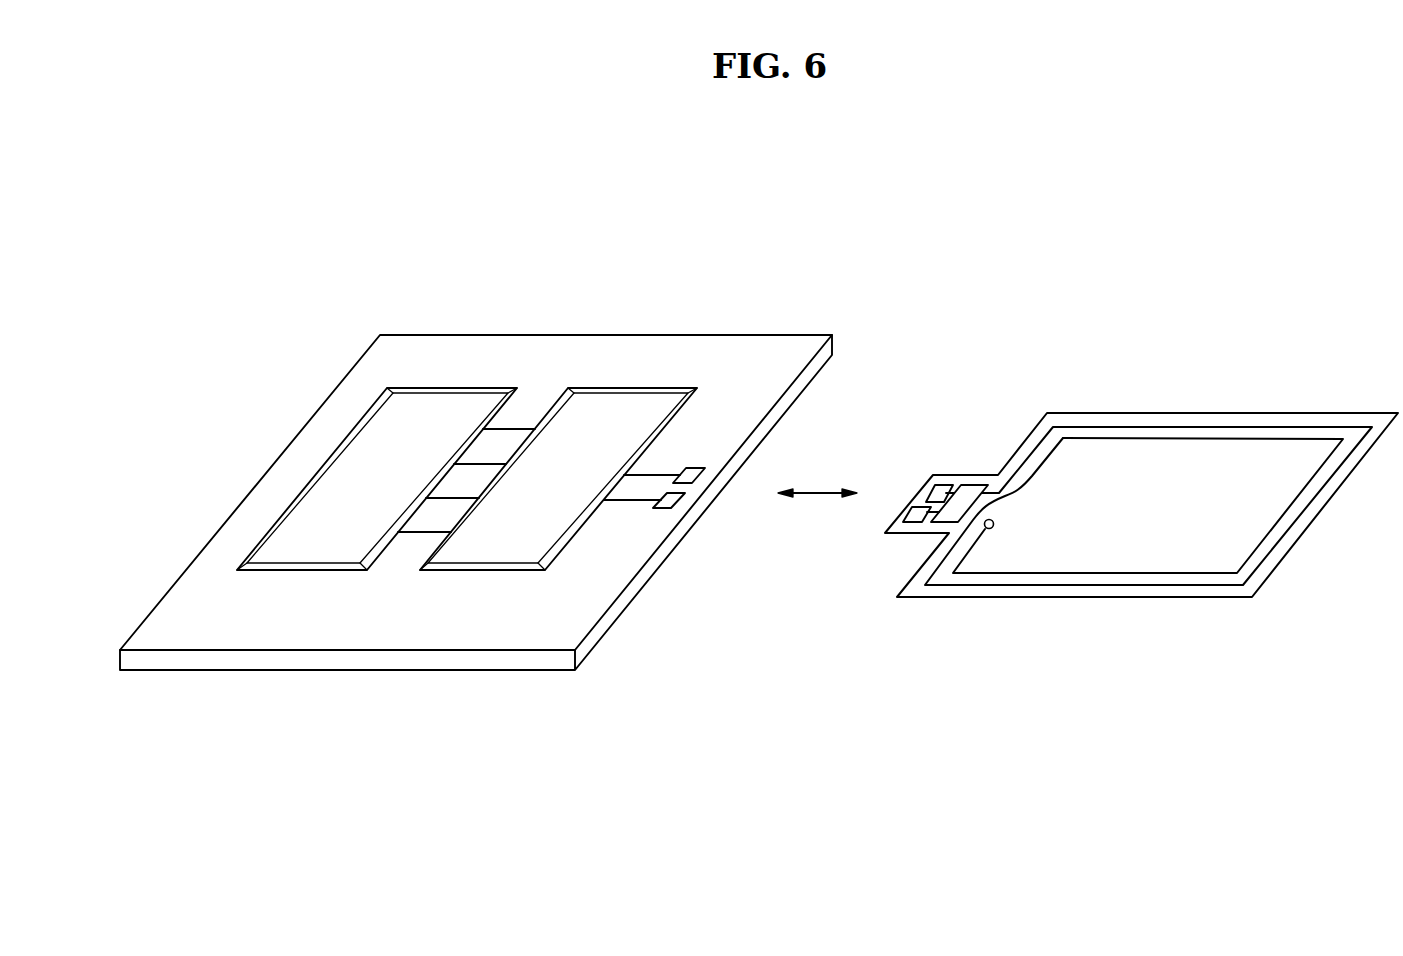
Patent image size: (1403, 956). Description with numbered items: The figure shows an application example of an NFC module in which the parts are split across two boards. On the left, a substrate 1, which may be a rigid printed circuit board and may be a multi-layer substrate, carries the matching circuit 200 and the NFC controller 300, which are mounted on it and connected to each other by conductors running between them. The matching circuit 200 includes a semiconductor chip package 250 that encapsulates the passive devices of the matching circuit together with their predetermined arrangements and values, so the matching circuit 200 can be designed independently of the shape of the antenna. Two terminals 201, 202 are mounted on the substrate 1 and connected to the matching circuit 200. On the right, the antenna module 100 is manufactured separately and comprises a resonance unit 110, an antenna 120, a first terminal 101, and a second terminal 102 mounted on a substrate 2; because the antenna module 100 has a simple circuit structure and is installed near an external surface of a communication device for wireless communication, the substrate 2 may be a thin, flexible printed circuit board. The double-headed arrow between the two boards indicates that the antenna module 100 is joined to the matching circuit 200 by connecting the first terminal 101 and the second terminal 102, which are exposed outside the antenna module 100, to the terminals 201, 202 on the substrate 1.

The substrate 1 is at (610, 335).
The NFC controller 300 is at (387, 497).
The matching circuit 200 is at (558, 464).
The semiconductor chip package 250 is at (630, 390).
The terminal 201 is at (697, 467).
The terminal 202 is at (654, 509).
The antenna module 100 is at (1122, 450).
The substrate 2 is at (1275, 413).
The antenna 120 is at (1097, 572).
The resonance unit 110 is at (973, 484).
The first terminal 101 is at (948, 484).
The second terminal 102 is at (920, 521).